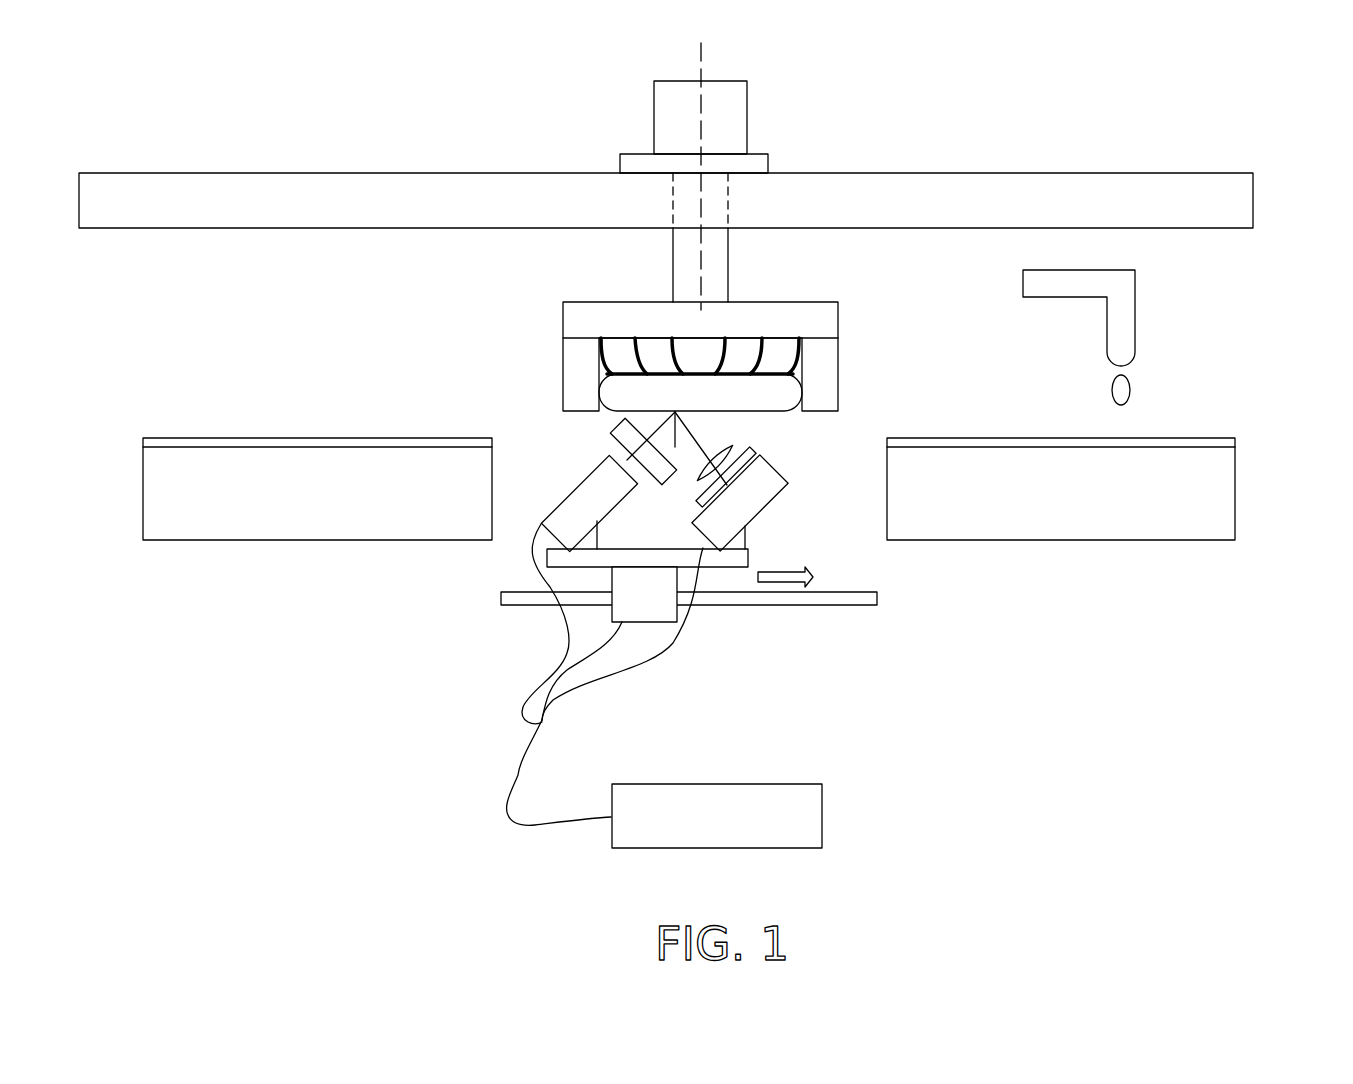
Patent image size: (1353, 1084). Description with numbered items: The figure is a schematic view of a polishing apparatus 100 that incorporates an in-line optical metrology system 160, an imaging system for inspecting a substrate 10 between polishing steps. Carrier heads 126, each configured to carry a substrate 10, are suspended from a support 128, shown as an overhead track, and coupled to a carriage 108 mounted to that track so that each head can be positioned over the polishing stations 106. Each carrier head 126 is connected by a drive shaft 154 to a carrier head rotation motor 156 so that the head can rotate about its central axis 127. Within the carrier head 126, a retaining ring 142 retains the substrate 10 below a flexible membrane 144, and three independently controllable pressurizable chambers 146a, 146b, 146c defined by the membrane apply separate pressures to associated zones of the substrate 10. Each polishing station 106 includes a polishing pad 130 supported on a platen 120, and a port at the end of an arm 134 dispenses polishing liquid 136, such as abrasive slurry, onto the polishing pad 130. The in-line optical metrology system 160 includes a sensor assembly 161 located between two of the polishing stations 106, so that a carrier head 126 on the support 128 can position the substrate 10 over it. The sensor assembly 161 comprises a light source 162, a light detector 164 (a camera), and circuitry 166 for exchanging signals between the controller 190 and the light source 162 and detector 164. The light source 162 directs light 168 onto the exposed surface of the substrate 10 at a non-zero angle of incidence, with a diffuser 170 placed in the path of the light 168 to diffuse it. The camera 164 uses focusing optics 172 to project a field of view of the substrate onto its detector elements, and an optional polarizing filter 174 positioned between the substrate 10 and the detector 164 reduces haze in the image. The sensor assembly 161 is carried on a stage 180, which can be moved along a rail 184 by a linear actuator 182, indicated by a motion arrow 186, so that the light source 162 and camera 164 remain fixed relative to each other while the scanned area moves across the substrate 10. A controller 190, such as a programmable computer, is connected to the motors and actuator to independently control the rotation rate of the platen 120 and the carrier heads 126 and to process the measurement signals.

The substrate 10 is at (700, 392).
The polishing apparatus 100 is at (227, 714).
The polishing station 106 is at (269, 411).
The carriage 108 is at (762, 154).
The platen 120 is at (142, 490).
The carrier head 126 is at (563, 318).
The axis 127 is at (701, 61).
The support 128 is at (1217, 173).
The polishing pad 130 is at (1237, 442).
The arm 134 is at (1107, 320).
The polishing liquid 136 is at (1112, 392).
The retaining ring 142 is at (840, 375).
The flexible membrane 144 is at (762, 376).
The pressurizable chamber 146a is at (702, 357).
The pressurizable chamber 146b is at (748, 357).
The pressurizable chamber 146c is at (785, 357).
The drive shaft 154 is at (687, 273).
The carrier head rotation motor 156 is at (654, 130).
The in-line optical metrology system 160 is at (508, 661).
The sensor assembly 161 is at (786, 521).
The light source 162 is at (589, 503).
The light detector 164 is at (740, 503).
The circuitry 166 is at (520, 778).
The light 168 is at (607, 453).
The diffuser 170 is at (613, 425).
The focusing optics 172 is at (722, 453).
The polarizing filter 174 is at (752, 450).
The stage 180 is at (548, 552).
The linear actuator 182 is at (644, 594).
The rail 184 is at (718, 606).
The direction of motion 186 is at (790, 583).
The controller 190 is at (822, 812).